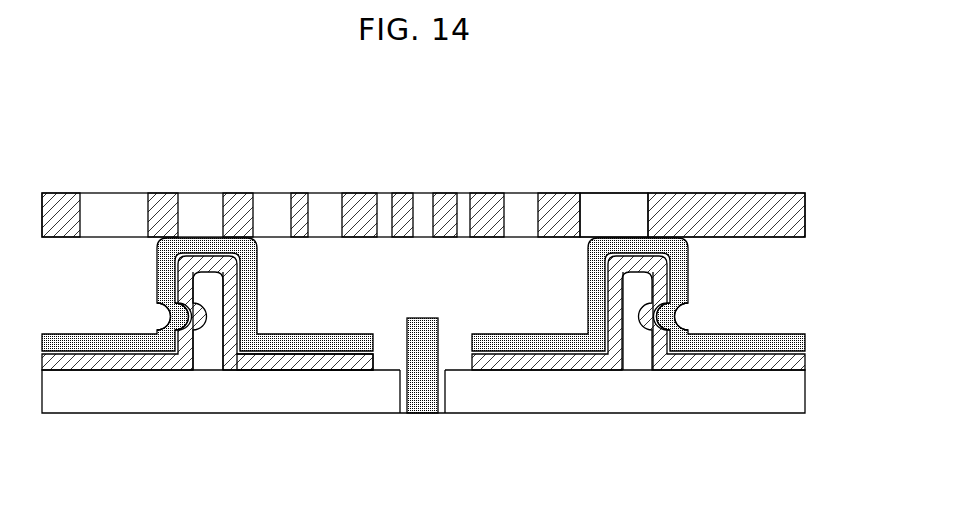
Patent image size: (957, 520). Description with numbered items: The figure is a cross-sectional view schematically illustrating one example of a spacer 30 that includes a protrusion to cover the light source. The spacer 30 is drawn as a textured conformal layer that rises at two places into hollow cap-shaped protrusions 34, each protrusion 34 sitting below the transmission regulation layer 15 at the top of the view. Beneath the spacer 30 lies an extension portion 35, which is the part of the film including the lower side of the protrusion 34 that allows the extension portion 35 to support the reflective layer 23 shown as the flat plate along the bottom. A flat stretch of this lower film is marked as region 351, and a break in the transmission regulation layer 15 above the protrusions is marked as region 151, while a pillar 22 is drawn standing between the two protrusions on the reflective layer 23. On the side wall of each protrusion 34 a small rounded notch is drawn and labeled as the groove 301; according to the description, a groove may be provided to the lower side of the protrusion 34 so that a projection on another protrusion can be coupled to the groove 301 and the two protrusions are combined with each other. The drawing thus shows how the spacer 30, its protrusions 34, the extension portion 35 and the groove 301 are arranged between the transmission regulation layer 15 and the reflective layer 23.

The transmission regulation layer 15 is at (798, 213).
The transmissive region of upper substrate 151 is at (604, 219).
The spacer 22 is at (436, 321).
The reflective layer 23 is at (798, 389).
The spacer 30 is at (812, 242).
The groove 301 is at (162, 318).
The protrusion 34 is at (265, 265).
The extension portion 35 is at (288, 371).
The flat portion of insulating layer 351 is at (345, 341).